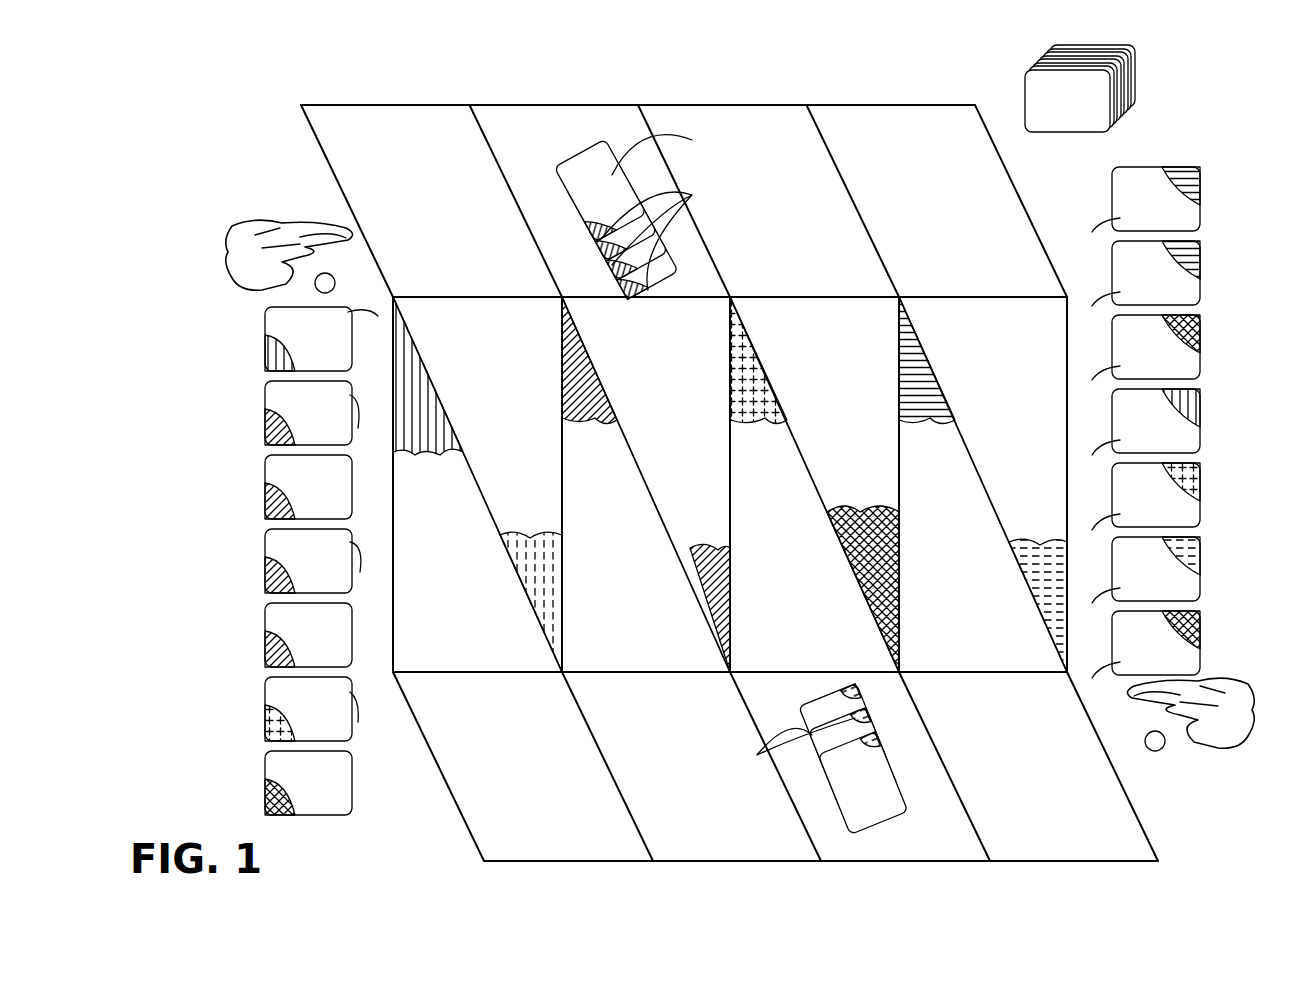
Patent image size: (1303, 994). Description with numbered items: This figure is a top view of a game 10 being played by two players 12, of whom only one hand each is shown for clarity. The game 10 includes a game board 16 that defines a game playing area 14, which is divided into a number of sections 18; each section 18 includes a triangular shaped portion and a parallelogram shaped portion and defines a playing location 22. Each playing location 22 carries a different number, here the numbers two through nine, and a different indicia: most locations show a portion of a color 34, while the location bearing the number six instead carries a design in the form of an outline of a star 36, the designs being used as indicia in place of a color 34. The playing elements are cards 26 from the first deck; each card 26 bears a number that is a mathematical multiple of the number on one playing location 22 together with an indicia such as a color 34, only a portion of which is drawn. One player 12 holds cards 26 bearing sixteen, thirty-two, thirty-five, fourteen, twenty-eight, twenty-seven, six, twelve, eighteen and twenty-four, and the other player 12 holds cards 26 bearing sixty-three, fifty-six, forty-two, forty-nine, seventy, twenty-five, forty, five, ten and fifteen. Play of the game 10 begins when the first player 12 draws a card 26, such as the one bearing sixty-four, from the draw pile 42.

The game 10 is at (1168, 130).
The player 12 is at (264, 222).
The game playing area 14 is at (418, 795).
The game board 16 is at (388, 605).
The section 18 is at (1039, 392).
The playing location 22 is at (532, 118).
The card 26 is at (290, 318).
The color 34 is at (422, 365).
The outline of a star 36 is at (672, 250).
The draw pile 42 is at (1075, 112).